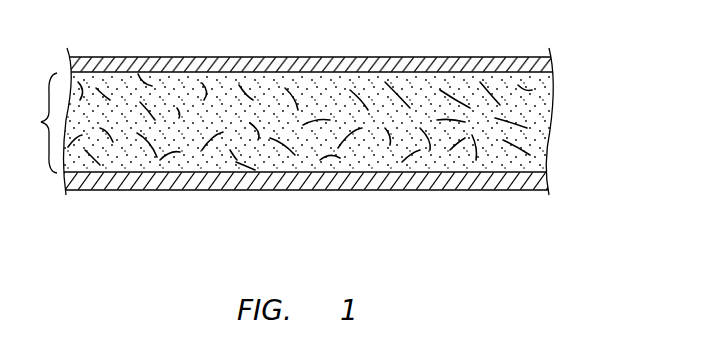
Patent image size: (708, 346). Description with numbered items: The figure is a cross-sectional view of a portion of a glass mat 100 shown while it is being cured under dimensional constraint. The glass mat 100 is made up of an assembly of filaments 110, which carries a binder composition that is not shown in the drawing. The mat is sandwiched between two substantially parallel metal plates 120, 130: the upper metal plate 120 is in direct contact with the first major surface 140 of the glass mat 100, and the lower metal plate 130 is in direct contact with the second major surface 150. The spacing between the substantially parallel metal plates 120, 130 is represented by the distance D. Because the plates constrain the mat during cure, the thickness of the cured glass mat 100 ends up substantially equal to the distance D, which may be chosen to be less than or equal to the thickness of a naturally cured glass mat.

The glass mat 100 is at (559, 106).
The assembly of filaments 110 is at (497, 150).
The metal plate 120 is at (153, 57).
The metal plate 130 is at (160, 189).
The first major surface 140 is at (524, 63).
The second major surface 150 is at (523, 179).
The distance D is at (38, 123).